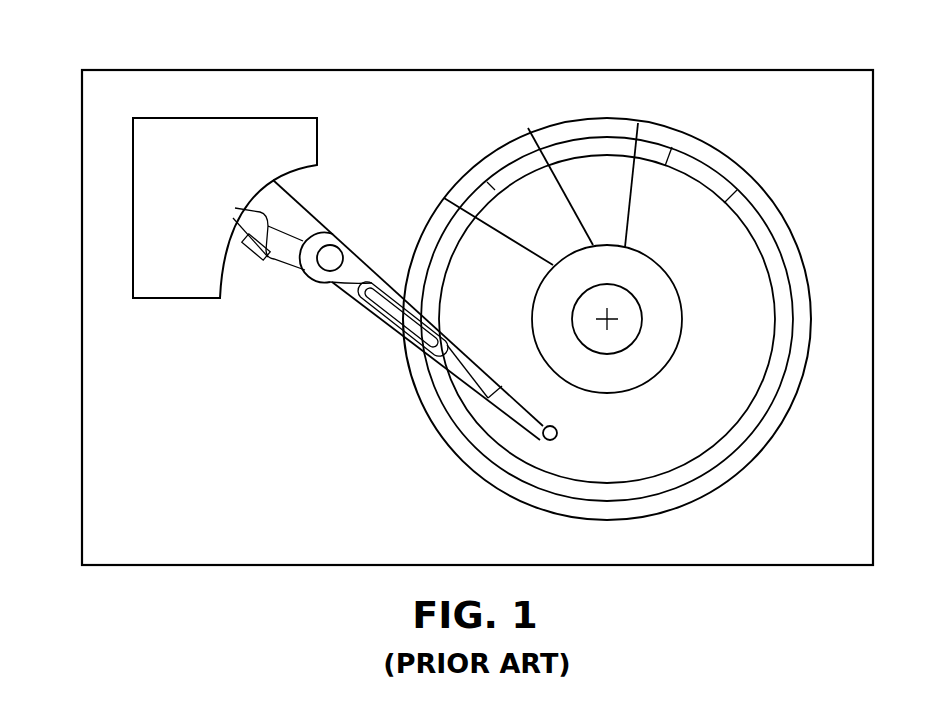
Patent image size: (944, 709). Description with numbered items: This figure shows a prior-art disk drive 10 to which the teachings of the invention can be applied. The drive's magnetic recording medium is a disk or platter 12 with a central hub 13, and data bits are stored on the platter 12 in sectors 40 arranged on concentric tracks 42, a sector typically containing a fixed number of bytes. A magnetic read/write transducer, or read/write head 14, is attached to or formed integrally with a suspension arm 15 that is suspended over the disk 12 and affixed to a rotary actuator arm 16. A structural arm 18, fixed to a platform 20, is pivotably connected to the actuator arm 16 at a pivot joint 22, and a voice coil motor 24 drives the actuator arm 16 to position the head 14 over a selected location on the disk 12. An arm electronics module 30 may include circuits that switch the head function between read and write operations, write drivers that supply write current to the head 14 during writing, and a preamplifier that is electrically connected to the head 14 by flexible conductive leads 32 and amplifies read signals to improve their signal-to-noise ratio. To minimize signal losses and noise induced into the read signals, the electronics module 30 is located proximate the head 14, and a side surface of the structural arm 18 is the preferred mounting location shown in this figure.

The disk drive 10 is at (105, 51).
The disk 12 is at (731, 189).
The hub 13 is at (684, 318).
The read/write head 14 is at (543, 439).
The suspension arm 15 is at (513, 414).
The actuator arm 16 is at (343, 287).
The structural arm 18 is at (297, 216).
The platform 20 is at (96, 437).
The pivot joint 22 is at (331, 257).
The voice coil motor 24 is at (172, 298).
The arm electronics module 30 is at (247, 259).
The flexible conductive leads 32 is at (240, 204).
The sectors 40 is at (580, 148).
The concentric tracks 42 is at (672, 150).